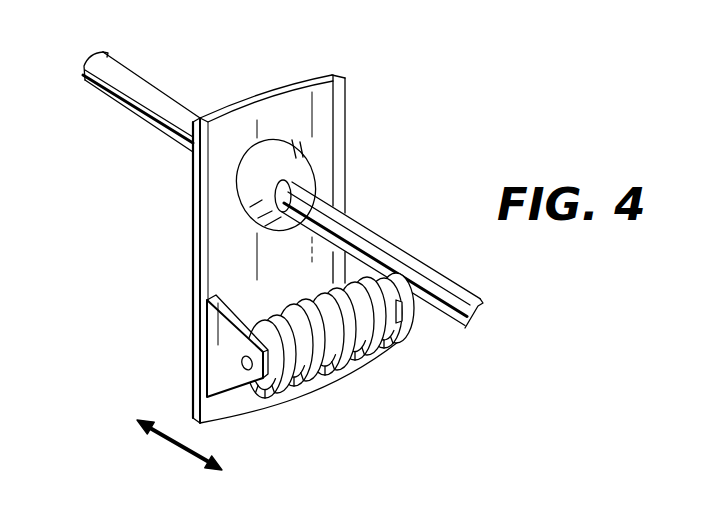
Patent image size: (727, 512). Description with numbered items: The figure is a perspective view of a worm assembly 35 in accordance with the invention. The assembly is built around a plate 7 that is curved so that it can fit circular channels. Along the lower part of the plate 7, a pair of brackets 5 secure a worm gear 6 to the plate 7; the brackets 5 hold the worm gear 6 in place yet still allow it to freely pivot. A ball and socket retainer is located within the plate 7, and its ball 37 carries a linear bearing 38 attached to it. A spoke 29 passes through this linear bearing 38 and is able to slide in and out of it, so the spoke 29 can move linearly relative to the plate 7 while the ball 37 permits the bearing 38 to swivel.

The brackets 5 is at (220, 358).
The worm gear 6 is at (310, 362).
The plate 7 is at (336, 107).
The spoke 29 is at (162, 104).
The worm assembly 35 is at (433, 167).
The ball 37 is at (253, 193).
The linear bearing 38 is at (302, 182).